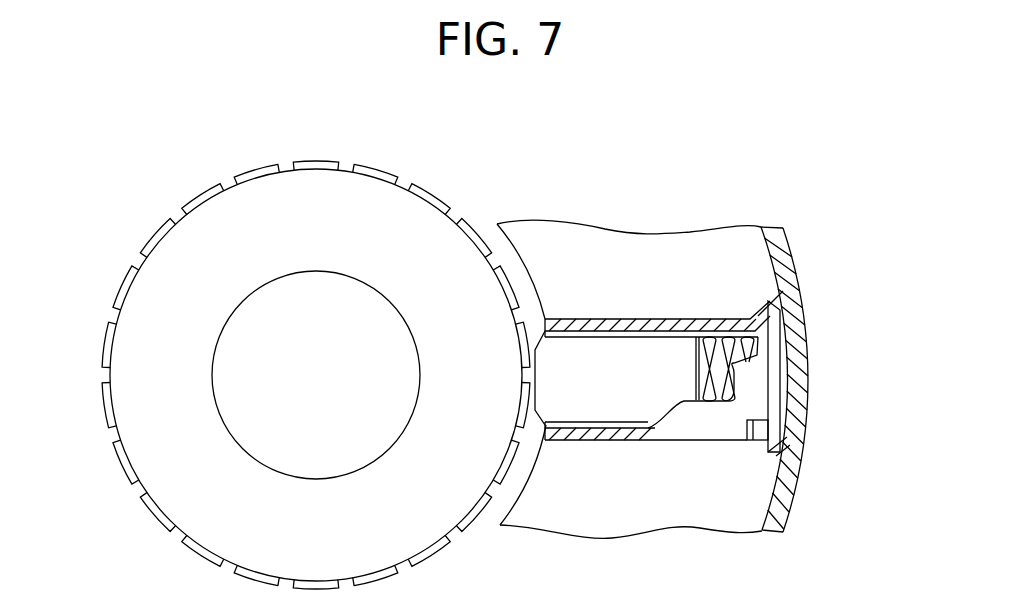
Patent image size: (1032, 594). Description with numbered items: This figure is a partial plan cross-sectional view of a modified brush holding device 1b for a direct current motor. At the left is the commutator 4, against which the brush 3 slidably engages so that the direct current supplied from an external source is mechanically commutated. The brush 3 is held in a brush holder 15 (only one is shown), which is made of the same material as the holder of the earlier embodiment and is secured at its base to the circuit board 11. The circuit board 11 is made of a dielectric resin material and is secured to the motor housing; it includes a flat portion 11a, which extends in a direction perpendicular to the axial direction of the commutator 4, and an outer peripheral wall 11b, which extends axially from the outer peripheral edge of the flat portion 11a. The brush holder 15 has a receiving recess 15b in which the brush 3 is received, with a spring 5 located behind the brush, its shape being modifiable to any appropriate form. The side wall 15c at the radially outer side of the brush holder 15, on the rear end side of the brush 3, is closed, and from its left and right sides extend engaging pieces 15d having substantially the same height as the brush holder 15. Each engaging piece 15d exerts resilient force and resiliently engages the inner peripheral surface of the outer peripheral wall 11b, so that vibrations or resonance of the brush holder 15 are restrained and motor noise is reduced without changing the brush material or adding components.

The commutator 4 is at (378, 174).
The brush holding device 1b is at (632, 168).
The brush holder 15 is at (636, 318).
The receiving recess 15b is at (590, 340).
The side wall 15c is at (780, 404).
The engaging pieces 15d is at (783, 292).
The circuit board 11 is at (652, 383).
The flat portion 11a is at (645, 522).
The outer peripheral wall 11b is at (766, 533).
The spring 5 is at (706, 337).
The brush 3 is at (600, 412).